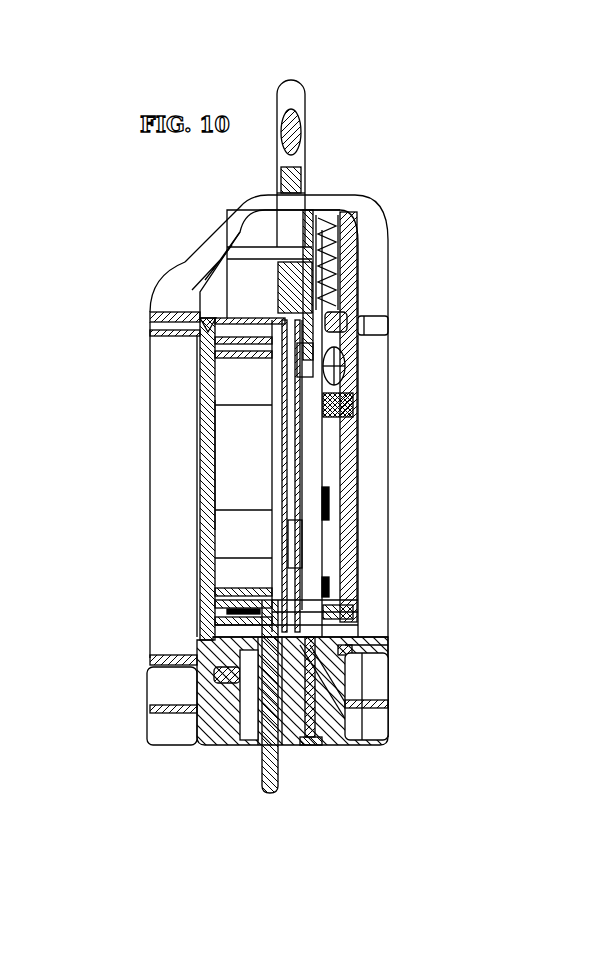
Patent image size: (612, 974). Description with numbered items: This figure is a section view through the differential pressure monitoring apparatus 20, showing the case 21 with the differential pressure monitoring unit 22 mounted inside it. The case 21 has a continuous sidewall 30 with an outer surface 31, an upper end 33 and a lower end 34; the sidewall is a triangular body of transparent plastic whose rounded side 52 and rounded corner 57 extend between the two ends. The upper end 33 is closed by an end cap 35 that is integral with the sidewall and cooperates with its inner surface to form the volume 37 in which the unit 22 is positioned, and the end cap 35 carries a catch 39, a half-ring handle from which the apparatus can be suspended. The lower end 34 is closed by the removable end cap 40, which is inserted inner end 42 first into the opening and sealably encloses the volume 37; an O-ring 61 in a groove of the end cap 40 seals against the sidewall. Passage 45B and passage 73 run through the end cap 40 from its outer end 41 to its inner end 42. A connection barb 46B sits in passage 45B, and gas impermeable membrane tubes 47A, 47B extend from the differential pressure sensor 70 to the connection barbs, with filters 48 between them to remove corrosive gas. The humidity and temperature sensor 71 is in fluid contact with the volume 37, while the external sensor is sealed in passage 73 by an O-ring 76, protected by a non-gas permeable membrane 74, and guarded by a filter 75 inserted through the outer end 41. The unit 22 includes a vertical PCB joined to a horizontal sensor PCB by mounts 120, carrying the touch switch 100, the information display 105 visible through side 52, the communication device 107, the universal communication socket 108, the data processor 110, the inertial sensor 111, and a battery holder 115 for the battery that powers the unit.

The differential pressure monitoring apparatus 20 is at (200, 268).
The case 21 is at (391, 379).
The differential pressure monitoring unit 22 is at (270, 388).
The continuous sidewall 30 is at (168, 368).
The outer surface 31 is at (178, 520).
The upper end 33 is at (391, 330).
The lower end 34 is at (380, 700).
The end cap 35 is at (360, 210).
The volume 37 is at (232, 482).
The catch 39 is at (300, 127).
The end cap 40 is at (388, 738).
The outer end 41 is at (173, 745).
The inner end 42 is at (300, 638).
The passage 45B is at (260, 731).
The connection barb 46B is at (263, 780).
The gas impermeable membrane tube 47A is at (200, 322).
The gas impermeable membrane tube 47B is at (328, 322).
The filter 48 is at (300, 548).
The side 52 is at (378, 477).
The corner 57 is at (160, 488).
The O-ring 61 is at (366, 679).
The differential pressure sensor 70 is at (215, 612).
The humidity and temperature sensor 71 is at (337, 723).
The passage 73 is at (322, 745).
The non-gas permeable membrane 74 is at (345, 647).
The filter 75 is at (312, 747).
The O-ring 76 is at (372, 640).
The touch switch 100 is at (275, 205).
The information display 105 is at (350, 440).
The communication device 107 is at (352, 246).
The universal communication socket 108 is at (343, 277).
The data processor 110 is at (347, 505).
The inertial sensor 111 is at (350, 612).
The battery holder 115 is at (235, 408).
The mount 120 is at (353, 602).